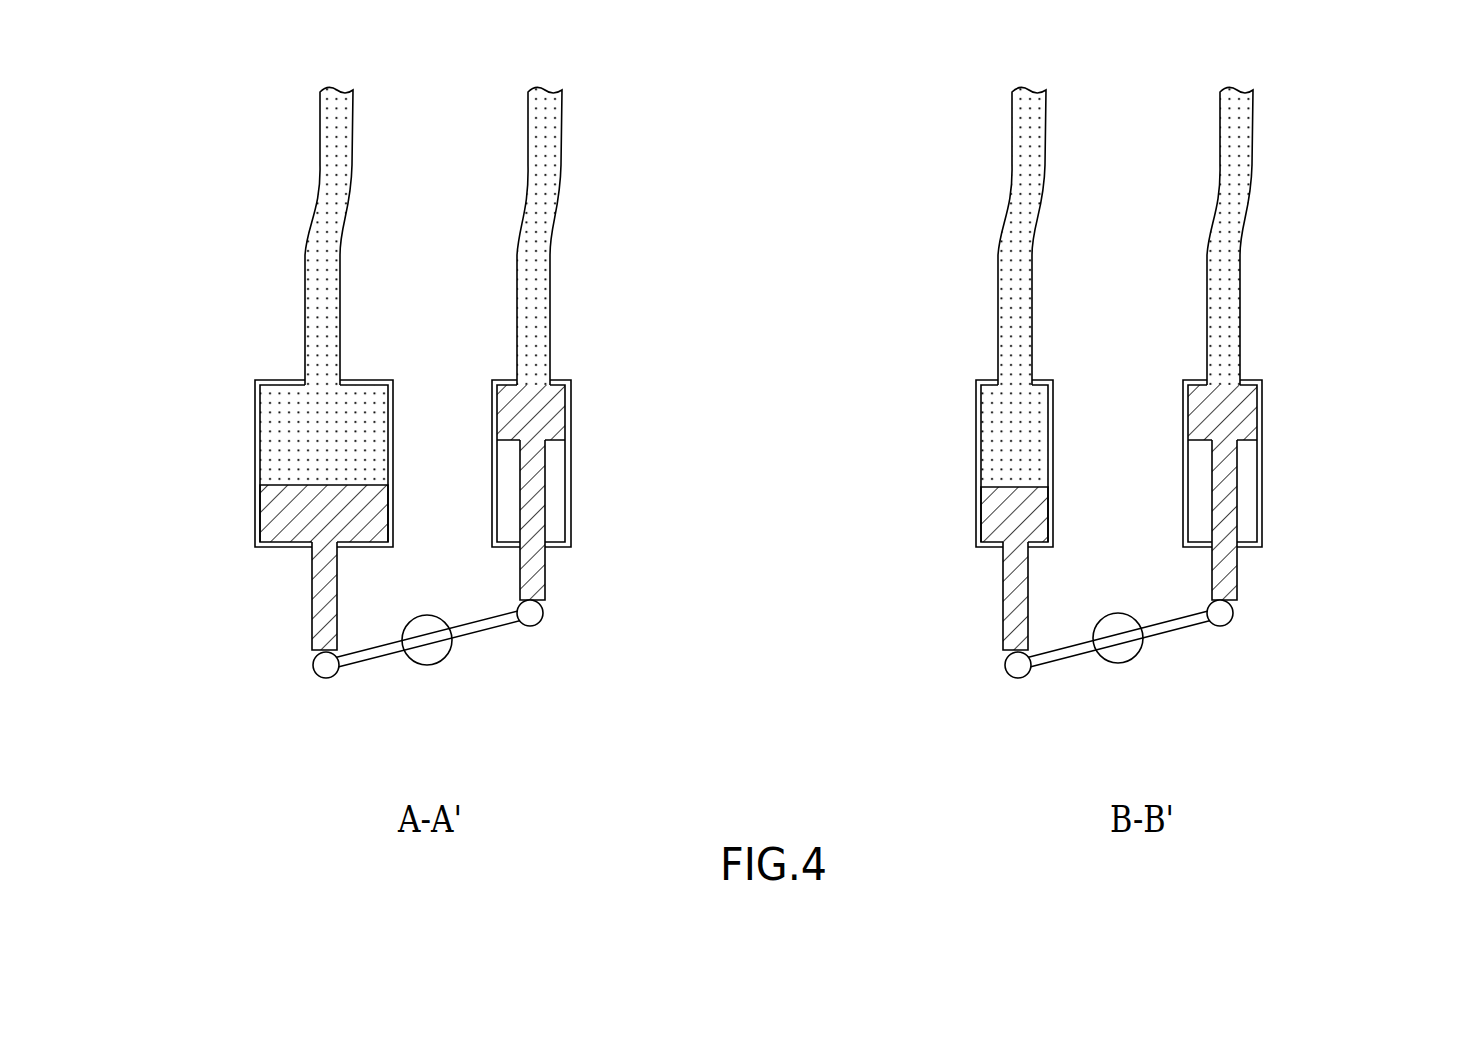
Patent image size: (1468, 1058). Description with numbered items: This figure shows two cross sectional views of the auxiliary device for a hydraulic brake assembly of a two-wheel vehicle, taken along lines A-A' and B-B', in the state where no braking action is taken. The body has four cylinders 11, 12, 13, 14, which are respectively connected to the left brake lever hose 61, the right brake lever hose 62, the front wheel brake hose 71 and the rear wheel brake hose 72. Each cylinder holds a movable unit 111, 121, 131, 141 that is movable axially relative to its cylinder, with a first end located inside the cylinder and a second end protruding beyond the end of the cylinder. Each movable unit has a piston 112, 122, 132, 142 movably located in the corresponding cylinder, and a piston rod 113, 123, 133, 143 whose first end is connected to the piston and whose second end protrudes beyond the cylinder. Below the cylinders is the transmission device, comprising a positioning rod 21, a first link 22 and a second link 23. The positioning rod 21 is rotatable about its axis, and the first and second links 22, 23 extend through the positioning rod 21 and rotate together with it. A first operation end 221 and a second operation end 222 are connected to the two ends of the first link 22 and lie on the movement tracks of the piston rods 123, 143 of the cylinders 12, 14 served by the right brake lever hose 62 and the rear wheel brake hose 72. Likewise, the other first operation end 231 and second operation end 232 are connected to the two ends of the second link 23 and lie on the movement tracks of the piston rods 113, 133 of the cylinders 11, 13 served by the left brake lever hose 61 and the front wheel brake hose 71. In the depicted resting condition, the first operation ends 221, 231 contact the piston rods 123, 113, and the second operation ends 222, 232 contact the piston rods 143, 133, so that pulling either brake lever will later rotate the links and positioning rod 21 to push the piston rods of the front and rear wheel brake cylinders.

The cylinder 11 is at (1262, 385).
The movable unit 111 is at (1316, 492).
The piston 112 is at (1257, 405).
The piston rod 113 is at (1237, 570).
The cylinder 12 is at (571, 395).
The movable unit 121 is at (629, 492).
The piston 122 is at (565, 430).
The piston rod 123 is at (545, 546).
The cylinder 13 is at (976, 392).
The movable unit 131 is at (923, 548).
The piston 132 is at (993, 491).
The piston rod 133 is at (1003, 600).
The cylinder 14 is at (255, 393).
The movable unit 141 is at (247, 567).
The piston 142 is at (292, 503).
The piston rod 143 is at (313, 610).
The positioning rod 21 is at (425, 656).
The first link 22 is at (480, 632).
The first operation end 221 is at (532, 613).
The second operation end 222 is at (330, 665).
The second link 23 is at (1170, 632).
The first operation end 231 is at (1222, 613).
The second operation end 232 is at (1022, 665).
The left brake lever hose 61 is at (1253, 150).
The right brake lever hose 62 is at (562, 150).
The front wheel brake hose 71 is at (1012, 167).
The rear wheel brake hose 72 is at (320, 167).